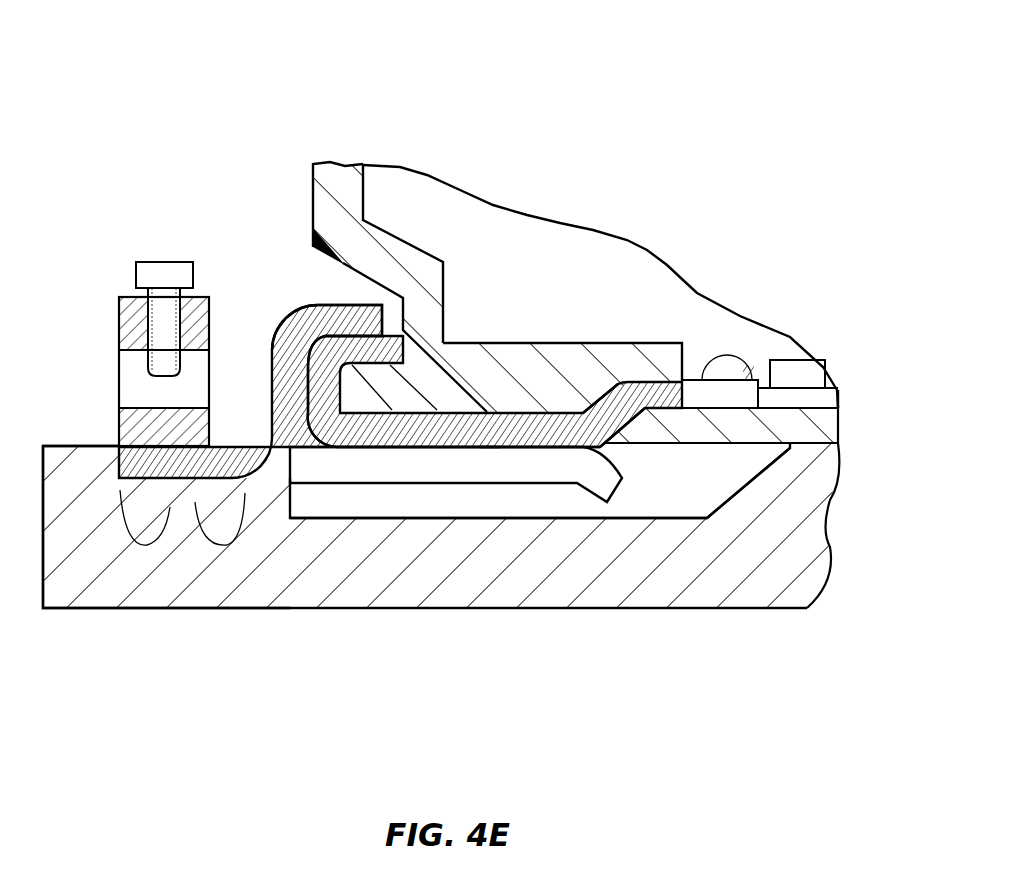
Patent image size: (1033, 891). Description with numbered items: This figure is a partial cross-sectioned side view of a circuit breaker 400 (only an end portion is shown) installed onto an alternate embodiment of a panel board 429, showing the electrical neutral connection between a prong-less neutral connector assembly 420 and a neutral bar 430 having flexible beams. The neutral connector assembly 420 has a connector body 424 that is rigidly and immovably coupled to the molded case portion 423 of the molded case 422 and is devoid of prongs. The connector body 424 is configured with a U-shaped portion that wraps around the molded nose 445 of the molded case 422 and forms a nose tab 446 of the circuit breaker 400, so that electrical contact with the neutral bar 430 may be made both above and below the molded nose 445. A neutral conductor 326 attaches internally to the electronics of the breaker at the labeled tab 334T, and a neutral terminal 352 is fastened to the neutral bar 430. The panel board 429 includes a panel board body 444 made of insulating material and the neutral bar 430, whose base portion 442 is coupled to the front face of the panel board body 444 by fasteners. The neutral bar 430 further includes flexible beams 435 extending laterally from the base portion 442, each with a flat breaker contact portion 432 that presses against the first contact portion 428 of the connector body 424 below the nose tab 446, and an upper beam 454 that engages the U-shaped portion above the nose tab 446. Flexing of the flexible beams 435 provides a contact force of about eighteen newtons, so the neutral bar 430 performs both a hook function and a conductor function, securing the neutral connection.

The circuit breaker 400 is at (526, 116).
The neutral connector assembly 420 is at (588, 310).
The molded case 422 is at (332, 160).
The molded case portion 423 is at (488, 338).
The connector body 424 is at (634, 434).
The neutral conductor 326 is at (800, 360).
The terminal dome contact 334T is at (718, 378).
The neutral terminal 352 is at (118, 317).
The first contact portion 428 is at (495, 448).
The panel board 429 is at (287, 614).
The neutral bar 430 is at (615, 511).
The breaker contact portion 432 is at (452, 440).
The flexible beams 435 is at (412, 486).
The base portion 442 is at (195, 502).
The panel board body 444 is at (100, 592).
The molded nose 445 is at (298, 366).
The nose tab 446 is at (330, 372).
The upper beam 454 is at (320, 328).